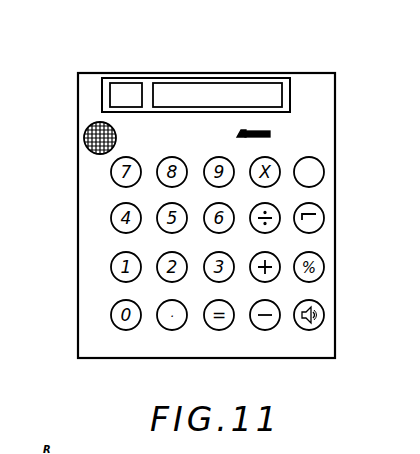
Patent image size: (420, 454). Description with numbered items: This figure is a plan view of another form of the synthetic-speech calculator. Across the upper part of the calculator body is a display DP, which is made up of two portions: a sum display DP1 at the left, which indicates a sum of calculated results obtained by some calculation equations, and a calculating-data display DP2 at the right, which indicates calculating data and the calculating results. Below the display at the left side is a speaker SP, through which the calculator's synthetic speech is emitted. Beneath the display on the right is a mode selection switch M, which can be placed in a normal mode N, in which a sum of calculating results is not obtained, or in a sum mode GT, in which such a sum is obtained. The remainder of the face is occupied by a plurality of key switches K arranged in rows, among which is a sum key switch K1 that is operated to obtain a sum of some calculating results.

The display DP is at (141, 79).
The sum display DP1 is at (115, 83).
The calculating-data display DP2 is at (243, 83).
The speaker SP is at (84, 152).
The mode selection switch M is at (270, 136).
The sum key switch K1 is at (323, 167).
The key switches K is at (323, 219).